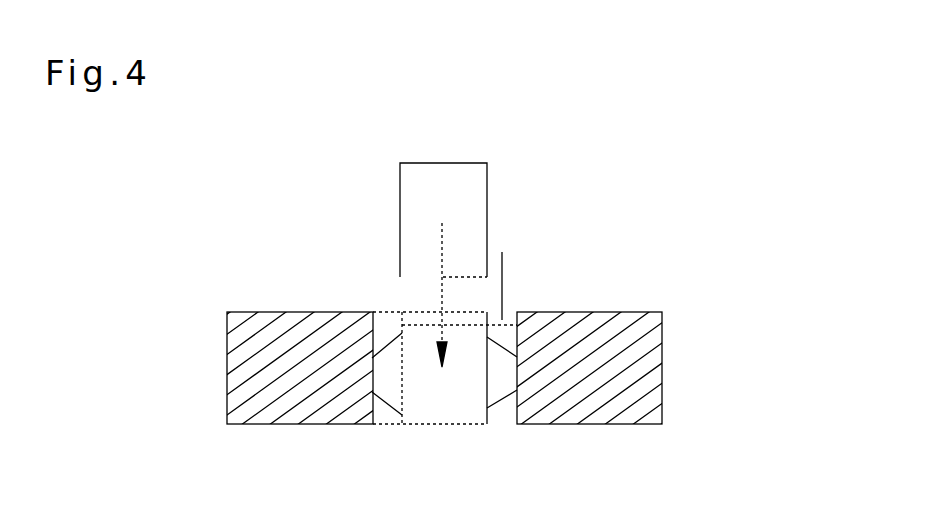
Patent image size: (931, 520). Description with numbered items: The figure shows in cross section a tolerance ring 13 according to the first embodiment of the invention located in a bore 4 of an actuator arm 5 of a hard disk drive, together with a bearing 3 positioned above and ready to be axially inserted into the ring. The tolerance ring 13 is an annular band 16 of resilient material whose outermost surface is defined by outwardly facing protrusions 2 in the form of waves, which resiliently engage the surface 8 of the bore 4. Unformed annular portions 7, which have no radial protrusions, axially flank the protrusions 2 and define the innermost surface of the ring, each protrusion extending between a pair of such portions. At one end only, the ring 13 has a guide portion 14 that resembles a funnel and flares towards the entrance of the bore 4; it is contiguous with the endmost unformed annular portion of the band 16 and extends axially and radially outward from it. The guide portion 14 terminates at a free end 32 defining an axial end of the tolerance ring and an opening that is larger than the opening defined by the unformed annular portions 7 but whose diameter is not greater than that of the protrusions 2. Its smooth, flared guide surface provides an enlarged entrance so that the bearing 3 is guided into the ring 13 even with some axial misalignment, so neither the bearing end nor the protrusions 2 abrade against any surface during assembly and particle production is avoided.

The outwardly facing protrusions 2 is at (373, 381).
The bearing 3 is at (487, 163).
The bore 4 is at (390, 412).
The actuator arm 5 is at (627, 383).
The unformed annular portions 7 is at (460, 314).
The surface of the bore 8 is at (503, 412).
The tolerance ring 13 is at (400, 328).
The guide portion 14 is at (528, 268).
The band 16 is at (487, 326).
The free end 32 is at (505, 318).